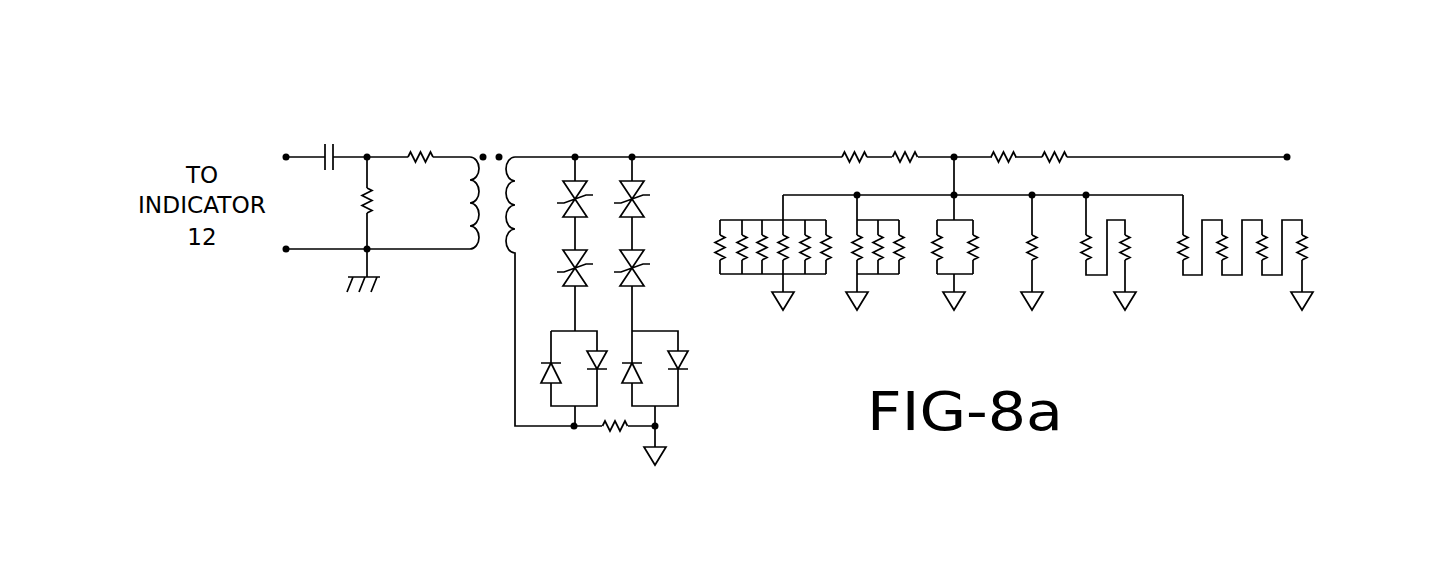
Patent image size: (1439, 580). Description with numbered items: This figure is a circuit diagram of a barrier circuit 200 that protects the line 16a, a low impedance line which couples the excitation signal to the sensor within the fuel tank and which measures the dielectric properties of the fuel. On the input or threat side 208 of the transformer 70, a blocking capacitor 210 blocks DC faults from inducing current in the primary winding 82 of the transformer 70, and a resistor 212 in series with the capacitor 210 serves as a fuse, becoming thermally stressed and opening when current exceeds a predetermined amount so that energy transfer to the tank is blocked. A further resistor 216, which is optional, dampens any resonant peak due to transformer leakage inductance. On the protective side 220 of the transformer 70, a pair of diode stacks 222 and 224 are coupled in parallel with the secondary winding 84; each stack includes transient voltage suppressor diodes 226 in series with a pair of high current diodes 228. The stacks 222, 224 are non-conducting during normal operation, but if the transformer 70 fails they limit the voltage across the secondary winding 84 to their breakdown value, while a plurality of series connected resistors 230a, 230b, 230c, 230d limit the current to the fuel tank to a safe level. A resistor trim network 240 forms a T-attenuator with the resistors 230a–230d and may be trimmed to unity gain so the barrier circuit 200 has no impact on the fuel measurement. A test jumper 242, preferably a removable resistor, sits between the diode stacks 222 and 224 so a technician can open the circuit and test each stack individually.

The line 16a is at (303, 157).
The blocking capacitor 210 is at (333, 147).
The threat side 208 is at (433, 124).
The resistor 212 is at (432, 158).
The resistor 216 is at (360, 210).
The protective side 220 is at (462, 335).
The primary winding 82 is at (473, 225).
The transformer 70 is at (500, 138).
The secondary winding 84 is at (512, 217).
The barrier circuit 200 is at (1259, 114).
The diode stack 222 is at (577, 146).
The diode stack 224 is at (686, 200).
The transient voltage suppressor diodes 226 is at (660, 193).
The high current diodes 228 is at (700, 345).
The test jumper 242 is at (600, 448).
The series connected resistor 230a is at (863, 155).
The series connected resistor 230b is at (912, 155).
The series connected resistor 230c is at (993, 155).
The series connected resistor 230d is at (1065, 155).
The resistor trim network 240 is at (1156, 309).